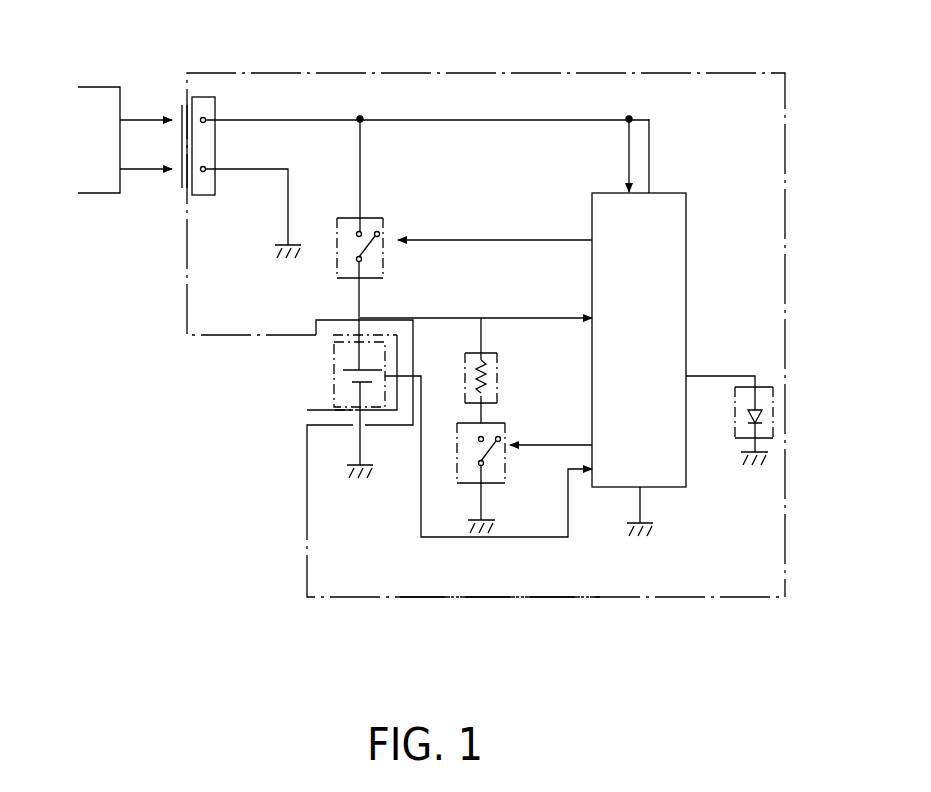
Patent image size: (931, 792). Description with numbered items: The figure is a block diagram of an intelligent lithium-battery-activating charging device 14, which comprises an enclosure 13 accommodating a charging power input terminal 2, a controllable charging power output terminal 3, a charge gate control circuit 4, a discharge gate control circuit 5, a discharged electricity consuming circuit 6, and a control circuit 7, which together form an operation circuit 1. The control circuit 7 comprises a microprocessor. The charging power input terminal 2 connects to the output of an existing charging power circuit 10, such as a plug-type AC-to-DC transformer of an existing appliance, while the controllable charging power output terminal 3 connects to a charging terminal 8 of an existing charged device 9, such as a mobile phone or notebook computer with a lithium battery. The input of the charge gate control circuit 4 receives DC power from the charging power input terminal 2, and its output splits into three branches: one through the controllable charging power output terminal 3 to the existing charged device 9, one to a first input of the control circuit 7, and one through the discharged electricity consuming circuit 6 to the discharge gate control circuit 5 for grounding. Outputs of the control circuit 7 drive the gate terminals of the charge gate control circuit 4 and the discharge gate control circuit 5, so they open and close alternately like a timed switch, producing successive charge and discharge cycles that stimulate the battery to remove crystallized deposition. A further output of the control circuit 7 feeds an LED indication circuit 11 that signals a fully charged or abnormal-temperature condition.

The operation circuit 1 is at (487, 582).
The charging power input terminal 2 is at (208, 183).
The controllable charging power output terminal 3 is at (327, 417).
The charge gate control circuit 4 is at (372, 242).
The discharge gate control circuit 5 is at (503, 455).
The discharged electricity consuming circuit 6 is at (498, 372).
The control circuit 7 is at (652, 349).
The charging terminal 8 is at (345, 386).
The existing charged device 9 is at (343, 370).
The charging power circuit 10 is at (95, 173).
The indication circuit 11 is at (733, 413).
The enclosure 13 is at (515, 72).
The intelligent lithium-battery-activating charging device 14 is at (135, 517).